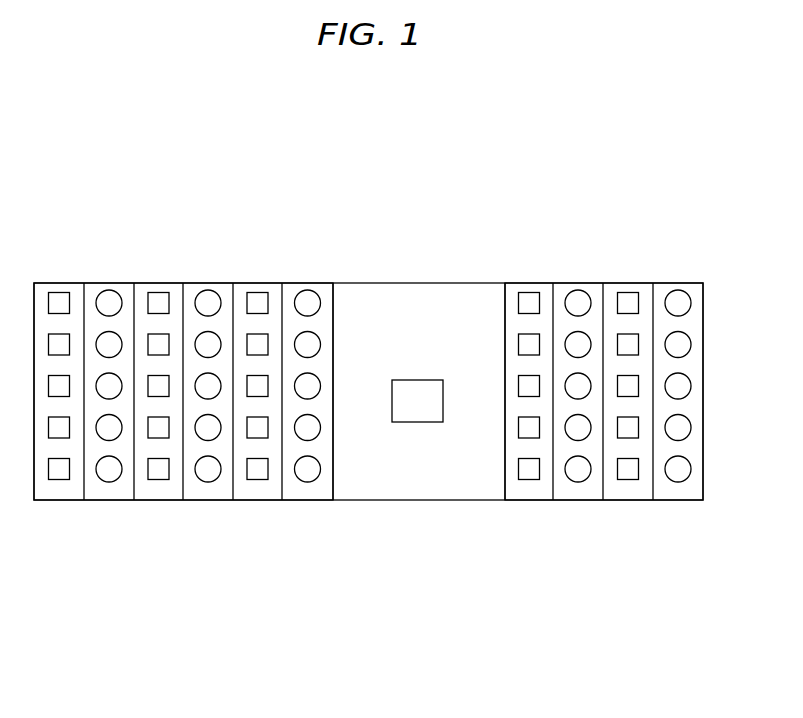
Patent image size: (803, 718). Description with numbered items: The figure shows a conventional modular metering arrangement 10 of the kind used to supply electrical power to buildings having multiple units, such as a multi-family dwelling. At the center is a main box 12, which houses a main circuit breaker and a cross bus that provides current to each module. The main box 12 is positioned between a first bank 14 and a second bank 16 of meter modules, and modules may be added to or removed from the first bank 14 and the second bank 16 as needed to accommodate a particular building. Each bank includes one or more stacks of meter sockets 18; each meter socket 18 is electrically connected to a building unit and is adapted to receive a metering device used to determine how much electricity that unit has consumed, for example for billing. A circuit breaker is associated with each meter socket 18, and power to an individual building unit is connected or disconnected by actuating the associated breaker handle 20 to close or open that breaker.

The modular metering arrangement 10 is at (465, 158).
The main box 12 is at (415, 283).
The first bank of meter modules 14 is at (130, 255).
The second bank of meter modules 16 is at (625, 255).
The meter socket 18 is at (103, 500).
The breaker handle 20 is at (55, 500).